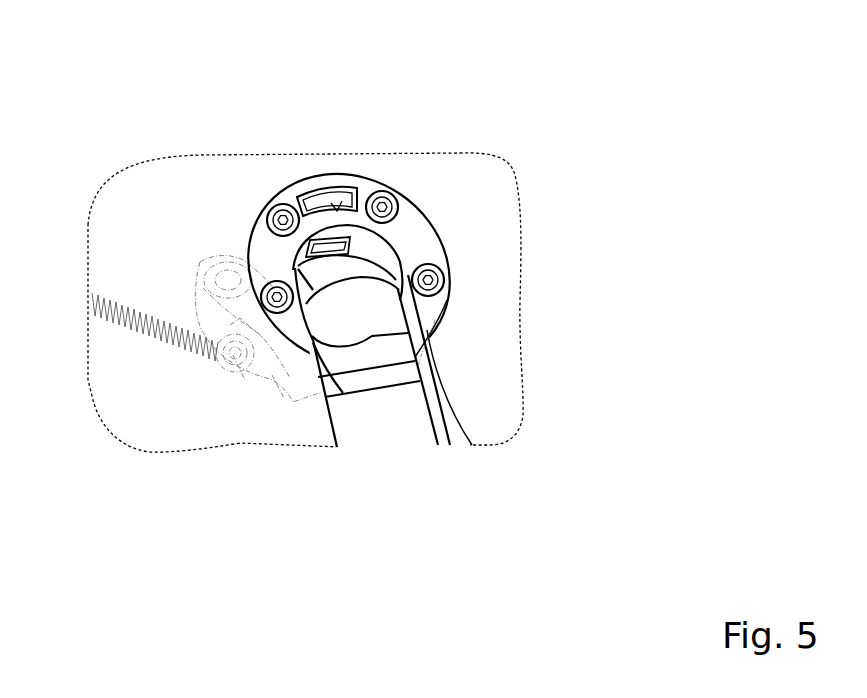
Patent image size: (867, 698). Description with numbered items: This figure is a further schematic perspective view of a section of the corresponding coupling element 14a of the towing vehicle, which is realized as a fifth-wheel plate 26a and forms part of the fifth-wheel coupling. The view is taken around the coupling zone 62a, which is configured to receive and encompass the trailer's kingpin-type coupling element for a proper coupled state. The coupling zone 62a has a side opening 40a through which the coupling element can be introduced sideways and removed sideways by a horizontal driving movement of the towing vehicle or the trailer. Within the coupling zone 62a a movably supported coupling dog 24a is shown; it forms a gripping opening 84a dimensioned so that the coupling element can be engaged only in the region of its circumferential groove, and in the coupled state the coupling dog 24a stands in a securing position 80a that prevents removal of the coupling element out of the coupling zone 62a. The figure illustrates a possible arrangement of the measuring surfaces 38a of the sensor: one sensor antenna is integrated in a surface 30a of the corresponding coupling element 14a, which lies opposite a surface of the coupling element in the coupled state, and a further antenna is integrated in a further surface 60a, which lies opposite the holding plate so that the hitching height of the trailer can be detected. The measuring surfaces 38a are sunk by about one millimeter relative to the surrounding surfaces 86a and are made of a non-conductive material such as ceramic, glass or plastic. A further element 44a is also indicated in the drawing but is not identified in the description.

The corresponding coupling element 14a is at (478, 178).
The securing position 80a is at (247, 200).
The surrounding surfaces 86a is at (387, 259).
The slot in flange 44a is at (300, 178).
The surface 30a is at (355, 259).
The measuring surface 38a is at (317, 189).
The further surface 60a is at (326, 249).
The coupling dog 24a is at (378, 350).
The gripping opening 84a is at (370, 321).
The fifth-wheel plate 26a is at (477, 400).
The coupling zone 62a is at (336, 324).
The side opening 40a is at (381, 417).